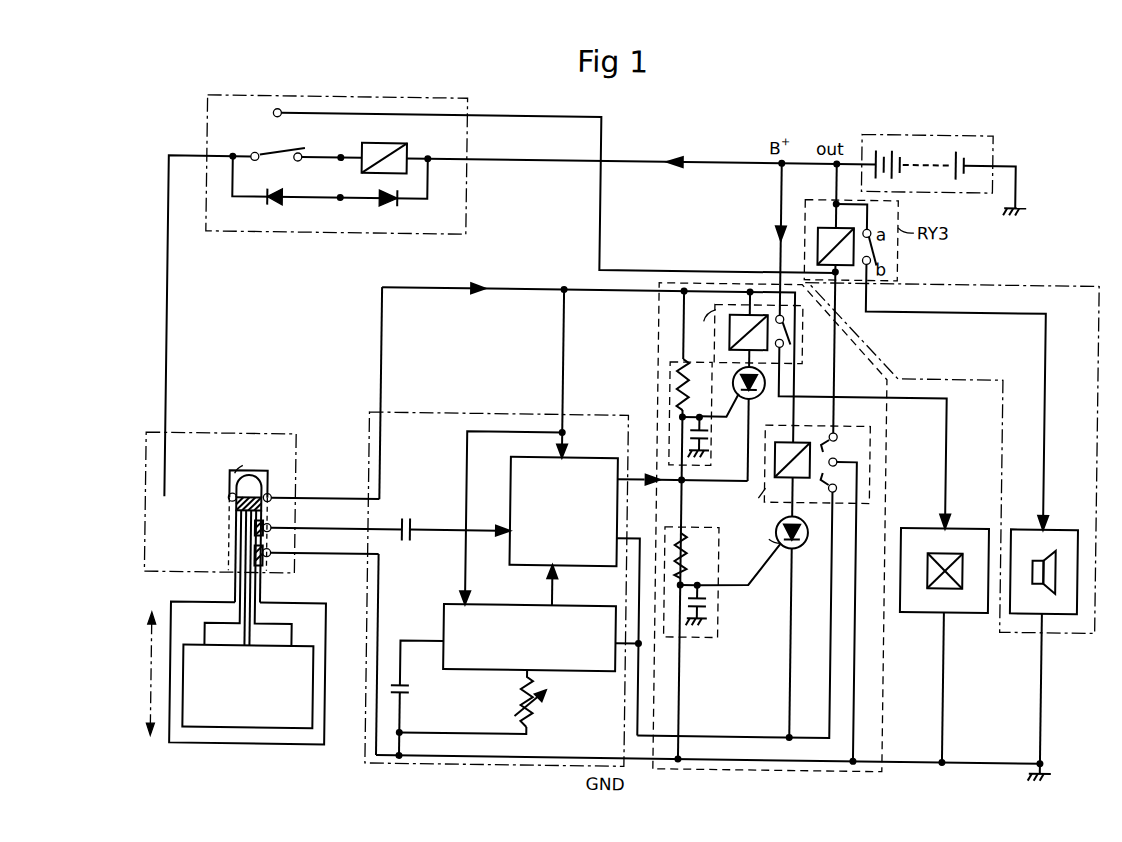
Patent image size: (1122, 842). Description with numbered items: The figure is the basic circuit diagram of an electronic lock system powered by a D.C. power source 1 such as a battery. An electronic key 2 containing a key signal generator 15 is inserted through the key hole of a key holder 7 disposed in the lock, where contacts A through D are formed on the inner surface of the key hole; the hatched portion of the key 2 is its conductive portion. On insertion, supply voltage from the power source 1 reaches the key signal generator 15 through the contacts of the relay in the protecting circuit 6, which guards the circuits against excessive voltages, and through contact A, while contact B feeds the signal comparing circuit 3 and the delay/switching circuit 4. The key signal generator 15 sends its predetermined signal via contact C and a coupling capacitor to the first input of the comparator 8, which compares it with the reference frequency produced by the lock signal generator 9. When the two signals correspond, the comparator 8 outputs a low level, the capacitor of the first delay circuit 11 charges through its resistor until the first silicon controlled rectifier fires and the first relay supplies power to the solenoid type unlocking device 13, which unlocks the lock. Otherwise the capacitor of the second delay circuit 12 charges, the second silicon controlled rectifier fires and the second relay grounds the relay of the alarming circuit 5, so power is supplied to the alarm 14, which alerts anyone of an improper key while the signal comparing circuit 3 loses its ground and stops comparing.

The D.C. power source 1 is at (919, 131).
The electronic key 2 is at (241, 750).
The signal comparing circuit 3 is at (526, 769).
The delay/switching circuit 4 is at (863, 770).
The alarming circuit 5 is at (1018, 280).
The protecting circuit 6 is at (421, 100).
The key holder 7 is at (146, 524).
The comparator 8 is at (585, 458).
The lock signal generator 9 is at (587, 606).
The first delay circuit 11 is at (669, 384).
The second delay circuit 12 is at (688, 526).
The unlocking device 13 is at (961, 524).
The alarm 14 is at (1059, 524).
The key signal generator 15 is at (316, 675).